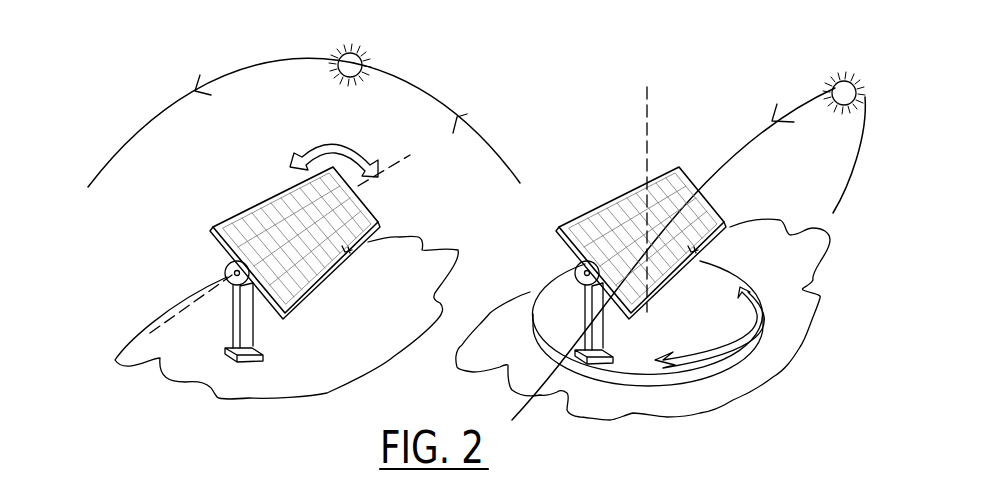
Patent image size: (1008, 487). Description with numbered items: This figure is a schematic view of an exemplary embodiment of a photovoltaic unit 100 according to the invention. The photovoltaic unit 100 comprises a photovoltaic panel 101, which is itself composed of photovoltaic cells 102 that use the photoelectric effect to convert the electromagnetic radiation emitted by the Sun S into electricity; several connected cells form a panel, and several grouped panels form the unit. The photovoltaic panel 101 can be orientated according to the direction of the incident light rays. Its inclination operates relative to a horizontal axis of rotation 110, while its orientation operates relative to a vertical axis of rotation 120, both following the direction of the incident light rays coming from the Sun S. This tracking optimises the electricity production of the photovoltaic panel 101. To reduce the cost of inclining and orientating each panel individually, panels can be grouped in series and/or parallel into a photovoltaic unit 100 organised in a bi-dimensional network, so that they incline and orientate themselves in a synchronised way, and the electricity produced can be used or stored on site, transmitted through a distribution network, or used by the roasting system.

The photovoltaic unit 100 is at (118, 243).
The photovoltaic panel 101 is at (222, 222).
The photovoltaic cells 102 is at (237, 245).
The horizontal axis of rotation 110 is at (161, 322).
The vertical axis of rotation 120 is at (648, 122).
The Sun S is at (340, 57).